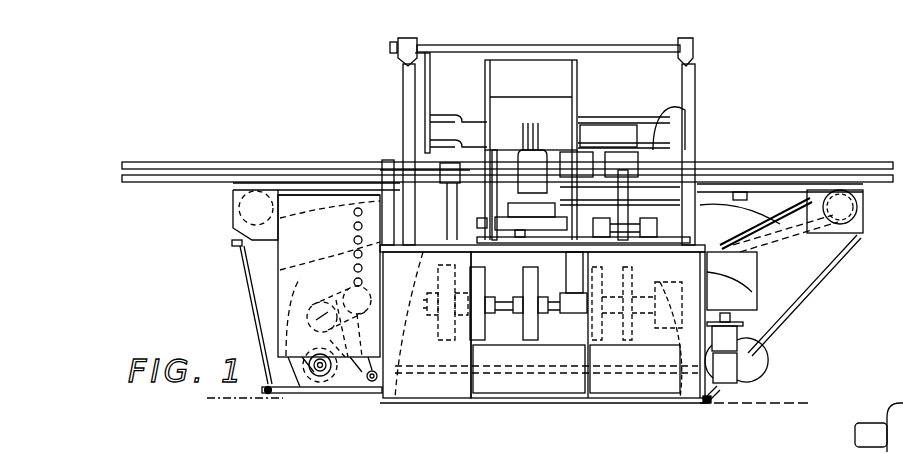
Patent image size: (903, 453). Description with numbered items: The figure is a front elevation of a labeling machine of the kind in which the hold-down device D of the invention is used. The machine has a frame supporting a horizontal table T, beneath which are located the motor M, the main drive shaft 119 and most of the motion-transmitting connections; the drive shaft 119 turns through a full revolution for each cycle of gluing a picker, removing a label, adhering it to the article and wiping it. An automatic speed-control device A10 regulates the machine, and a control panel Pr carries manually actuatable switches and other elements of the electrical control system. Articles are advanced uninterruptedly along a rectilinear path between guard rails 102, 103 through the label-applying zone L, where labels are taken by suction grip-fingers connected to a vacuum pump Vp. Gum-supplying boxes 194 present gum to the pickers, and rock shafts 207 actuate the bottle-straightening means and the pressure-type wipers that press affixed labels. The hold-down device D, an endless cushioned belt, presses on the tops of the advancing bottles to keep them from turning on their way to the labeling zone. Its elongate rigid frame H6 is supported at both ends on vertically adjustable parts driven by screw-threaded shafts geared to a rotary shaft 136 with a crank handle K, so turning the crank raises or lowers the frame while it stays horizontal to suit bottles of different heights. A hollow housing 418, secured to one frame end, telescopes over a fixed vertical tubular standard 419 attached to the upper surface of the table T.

The guard rail 102 is at (190, 162).
The guard rail 103 is at (206, 182).
The control panel Pr is at (293, 203).
The crank handle K is at (392, 62).
The rotary shaft 136 is at (457, 46).
The label-applying zone L is at (537, 77).
The hold-down device D is at (464, 112).
The elongate rigid frame H6 is at (608, 134).
The hollow housing 418 is at (680, 116).
The vertical tubular standard 419 is at (692, 150).
The rock shafts 207 is at (632, 200).
The gum-supplying boxes 194 is at (540, 224).
The automatic speed-control device A10 is at (290, 322).
The table T is at (552, 325).
The main drive shaft 119 is at (507, 306).
The vacuum pump Vp is at (733, 334).
The motor M is at (297, 390).